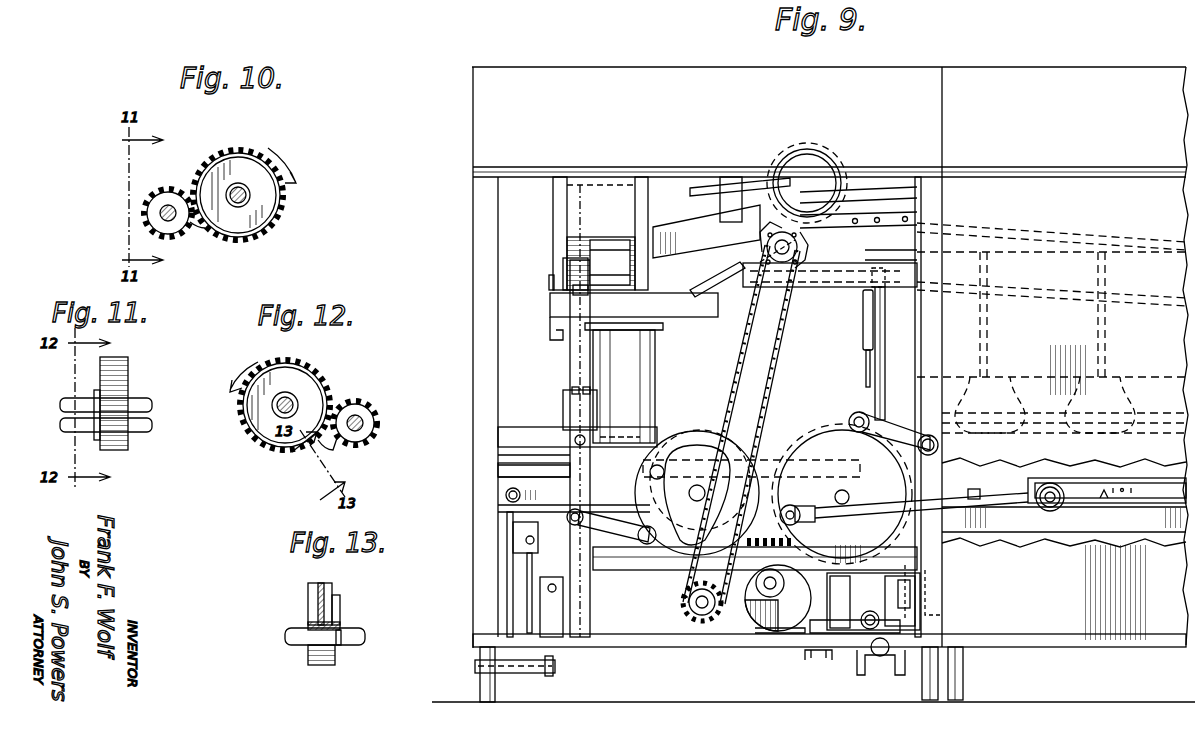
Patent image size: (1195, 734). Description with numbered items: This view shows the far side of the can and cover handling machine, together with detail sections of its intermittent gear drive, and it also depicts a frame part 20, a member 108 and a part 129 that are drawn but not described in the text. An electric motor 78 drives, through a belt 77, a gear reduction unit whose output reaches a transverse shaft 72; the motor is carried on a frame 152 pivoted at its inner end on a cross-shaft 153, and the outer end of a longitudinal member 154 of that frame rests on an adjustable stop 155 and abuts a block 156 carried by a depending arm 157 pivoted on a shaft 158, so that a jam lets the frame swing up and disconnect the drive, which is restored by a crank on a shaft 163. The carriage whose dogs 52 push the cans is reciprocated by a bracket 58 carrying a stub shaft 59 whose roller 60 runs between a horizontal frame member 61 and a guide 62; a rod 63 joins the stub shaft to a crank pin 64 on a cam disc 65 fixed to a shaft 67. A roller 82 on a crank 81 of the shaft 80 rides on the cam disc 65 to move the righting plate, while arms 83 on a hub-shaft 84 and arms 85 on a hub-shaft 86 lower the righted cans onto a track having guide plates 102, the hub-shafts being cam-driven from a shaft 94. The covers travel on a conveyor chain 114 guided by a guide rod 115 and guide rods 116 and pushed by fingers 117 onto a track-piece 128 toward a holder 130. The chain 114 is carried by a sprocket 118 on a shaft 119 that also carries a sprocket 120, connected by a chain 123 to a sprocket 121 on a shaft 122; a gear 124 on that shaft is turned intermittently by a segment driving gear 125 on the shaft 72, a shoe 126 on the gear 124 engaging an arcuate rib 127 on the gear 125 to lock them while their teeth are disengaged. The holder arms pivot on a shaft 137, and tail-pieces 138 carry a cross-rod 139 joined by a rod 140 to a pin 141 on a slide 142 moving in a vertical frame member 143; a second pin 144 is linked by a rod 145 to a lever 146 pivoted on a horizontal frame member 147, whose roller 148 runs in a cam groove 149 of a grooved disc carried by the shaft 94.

In FIG. 9, the cylinder 20 is at (655, 332).
In FIG. 9, the dogs 52 is at (1080, 432).
In FIG. 9, the laterally extending bracket 58 is at (1095, 500).
In FIG. 9, the stub shaft 59 is at (1052, 508).
In FIG. 9, the roller 60 is at (1048, 505).
In FIG. 9, the horizontal frame member 61 is at (1146, 532).
In FIG. 9, the guide 62 is at (1100, 478).
In FIG. 9, the rod 63 is at (1008, 503).
In FIG. 9, the crank pin 64 is at (792, 505).
In FIG. 9, the cam disc 65 is at (835, 432).
In FIG. 9, the shaft 67 is at (850, 496).
In FIG. 9, the transverse shaft 72 is at (788, 580).
In FIG. 10, the transverse shaft 72 is at (236, 207).
In FIG. 11, the transverse shaft 72 is at (68, 400).
In FIG. 12, the transverse shaft 72 is at (296, 395).
In FIG. 9, the belt 77 is at (935, 610).
In FIG. 9, the electric motor 78 is at (875, 587).
In FIG. 9, the shaft 80 is at (940, 445).
In FIG. 9, the crank 81 is at (932, 455).
In FIG. 9, the roller 82 is at (858, 412).
In FIG. 9, the arms 83 is at (885, 352).
In FIG. 9, the hub-shaft 84 is at (865, 470).
In FIG. 9, the arms 85 is at (772, 462).
In FIG. 9, the hub-shaft 86 is at (712, 452).
In FIG. 9, the shaft 94 is at (700, 470).
In FIG. 9, the guide plates 102 is at (655, 437).
In FIG. 9, the pivot pin 108 is at (505, 494).
In FIG. 9, the conveyor chain 114 is at (1018, 225).
In FIG. 9, the guide rod 115 is at (706, 185).
In FIG. 9, the guide rods 116 is at (905, 210).
In FIG. 9, the fingers 117 is at (680, 293).
In FIG. 9, the sprocket 118 is at (805, 245).
In FIG. 9, the shaft 119 is at (760, 225).
In FIG. 9, the sprocket 120 is at (815, 271).
In FIG. 9, the sprocket 121 is at (690, 612).
In FIG. 9, the shaft 122 is at (700, 610).
In FIG. 10, the shaft 122 is at (160, 213).
In FIG. 11, the shaft 122 is at (70, 432).
In FIG. 12, the shaft 122 is at (365, 424).
In FIG. 13, the shaft 122 is at (288, 636).
In FIG. 9, the chain 123 is at (780, 355).
In FIG. 9, the gear 124 is at (745, 600).
In FIG. 10, the gear 124 is at (137, 197).
In FIG. 11, the gear 124 is at (110, 450).
In FIG. 12, the gear 124 is at (376, 406).
In FIG. 13, the gear 124 is at (315, 665).
In FIG. 9, the segment driving gear 125 is at (778, 612).
In FIG. 10, the segment driving gear 125 is at (256, 187).
In FIG. 11, the segment driving gear 125 is at (122, 360).
In FIG. 12, the segment driving gear 125 is at (281, 400).
In FIG. 13, the segment driving gear 125 is at (308, 594).
In FIG. 10, the shoe 126 is at (196, 225).
In FIG. 11, the shoe 126 is at (98, 440).
In FIG. 12, the shoe 126 is at (318, 445).
In FIG. 13, the shoe 126 is at (341, 640).
In FIG. 10, the arcuate rib 127 is at (277, 222).
In FIG. 12, the arcuate rib 127 is at (262, 440).
In FIG. 13, the arcuate rib 127 is at (340, 604).
In FIG. 9, the track-piece 128 is at (700, 280).
In FIG. 9, the frame upright 129 is at (550, 233).
In FIG. 9, the holder 130 is at (608, 207).
In FIG. 9, the shaft 137 is at (553, 285).
In FIG. 9, the tail-pieces 138 is at (565, 257).
In FIG. 9, the cross-rod 139 is at (612, 258).
In FIG. 9, the rod 140 is at (575, 368).
In FIG. 9, the pin 141 is at (563, 403).
In FIG. 9, the slide 142 is at (597, 395).
In FIG. 9, the vertical frame member 143 is at (570, 348).
In FIG. 9, the pin 144 is at (560, 436).
In FIG. 9, the rod 145 is at (575, 465).
In FIG. 9, the lever 146 is at (622, 503).
In FIG. 9, the horizontal frame member 147 is at (605, 570).
In FIG. 9, the roller 148 is at (680, 555).
In FIG. 9, the cam groove 149 is at (700, 492).
In FIG. 9, the frame 152 is at (822, 660).
In FIG. 9, the cross-shaft 153 is at (880, 657).
In FIG. 9, the longitudinal member 154 is at (638, 654).
In FIG. 9, the adjustable stop 155 is at (560, 660).
In FIG. 9, the block 156 is at (540, 628).
In FIG. 9, the depending arm 157 is at (527, 562).
In FIG. 9, the shaft 158 is at (525, 540).
In FIG. 9, the shaft 163 is at (548, 588).